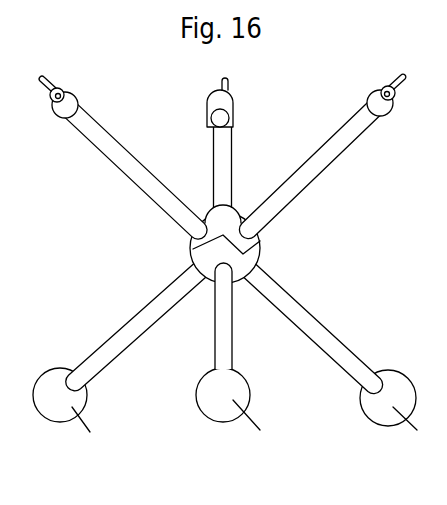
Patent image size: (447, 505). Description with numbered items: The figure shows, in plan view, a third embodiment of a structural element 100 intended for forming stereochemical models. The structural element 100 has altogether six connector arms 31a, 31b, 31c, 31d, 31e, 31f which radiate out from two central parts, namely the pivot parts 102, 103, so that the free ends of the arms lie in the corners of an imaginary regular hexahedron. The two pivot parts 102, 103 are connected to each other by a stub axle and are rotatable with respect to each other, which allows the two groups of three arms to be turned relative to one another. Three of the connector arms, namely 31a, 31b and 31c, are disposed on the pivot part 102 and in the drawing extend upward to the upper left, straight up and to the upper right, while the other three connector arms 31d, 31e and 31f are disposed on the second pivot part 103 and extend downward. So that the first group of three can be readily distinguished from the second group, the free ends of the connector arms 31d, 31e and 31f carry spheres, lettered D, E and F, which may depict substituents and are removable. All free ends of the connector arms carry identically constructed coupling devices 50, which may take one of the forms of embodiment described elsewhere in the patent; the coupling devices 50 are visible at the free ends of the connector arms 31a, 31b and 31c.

The structural element 100 is at (234, 265).
The pivot part 102 is at (247, 242).
The pivot part 103 is at (203, 260).
The connector arm 31a is at (327, 158).
The connector arm 31b is at (131, 169).
The connector arm 31c is at (222, 165).
The connector arm 31d is at (312, 324).
The connector arm 31e is at (222, 334).
The connector arm 31f is at (120, 340).
The coupling device 50 is at (75, 105).